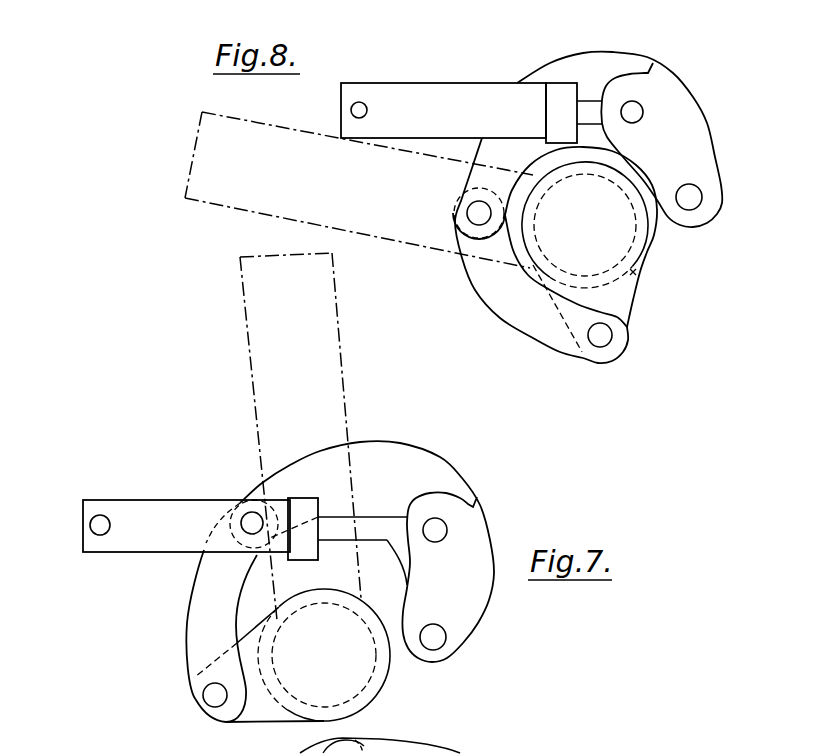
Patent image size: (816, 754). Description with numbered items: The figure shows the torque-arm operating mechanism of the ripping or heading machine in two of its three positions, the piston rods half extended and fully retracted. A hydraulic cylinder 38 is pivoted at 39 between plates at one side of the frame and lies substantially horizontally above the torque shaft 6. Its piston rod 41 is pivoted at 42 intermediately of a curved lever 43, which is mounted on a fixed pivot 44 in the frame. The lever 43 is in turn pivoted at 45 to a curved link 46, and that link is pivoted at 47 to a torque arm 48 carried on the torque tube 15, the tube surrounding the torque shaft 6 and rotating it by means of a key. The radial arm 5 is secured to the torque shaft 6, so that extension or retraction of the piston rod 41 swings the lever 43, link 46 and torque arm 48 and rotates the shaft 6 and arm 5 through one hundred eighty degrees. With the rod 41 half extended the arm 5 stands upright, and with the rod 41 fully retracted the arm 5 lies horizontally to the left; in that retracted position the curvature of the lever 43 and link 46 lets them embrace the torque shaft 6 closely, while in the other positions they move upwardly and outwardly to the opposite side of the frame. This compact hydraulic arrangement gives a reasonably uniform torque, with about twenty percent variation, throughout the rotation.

In FIG. 8, the radial arm 5 is at (289, 137).
In FIG. 7, the radial arm 5 is at (258, 419).
In FIG. 8, the torque shaft 6 is at (640, 263).
In FIG. 7, the torque shaft 6 is at (368, 681).
In FIG. 8, the torque tube 15 is at (637, 283).
In FIG. 7, the torque tube 15 is at (370, 700).
In FIG. 8, the hydraulic cylinder 38 is at (425, 93).
In FIG. 7, the hydraulic cylinder 38 is at (163, 510).
In FIG. 8, the pivot 39 is at (351, 105).
In FIG. 7, the pivot 39 is at (100, 514).
In FIG. 8, the piston rod 41 is at (594, 101).
In FIG. 7, the piston rod 41 is at (397, 518).
In FIG. 8, the pivot 42 is at (644, 113).
In FIG. 7, the pivot 42 is at (447, 532).
In FIG. 8, the curved lever 43 is at (537, 78).
In FIG. 7, the curved lever 43 is at (458, 490).
In FIG. 8, the fixed pivot 44 is at (693, 211).
In FIG. 7, the fixed pivot 44 is at (440, 640).
In FIG. 8, the pivot 45 is at (467, 211).
In FIG. 7, the pivot 45 is at (242, 498).
In FIG. 8, the curved link 46 is at (497, 295).
In FIG. 7, the curved link 46 is at (195, 607).
In FIG. 8, the pivot 47 is at (606, 339).
In FIG. 7, the pivot 47 is at (203, 698).
In FIG. 8, the torque arm 48 is at (627, 298).
In FIG. 7, the torque arm 48 is at (268, 708).